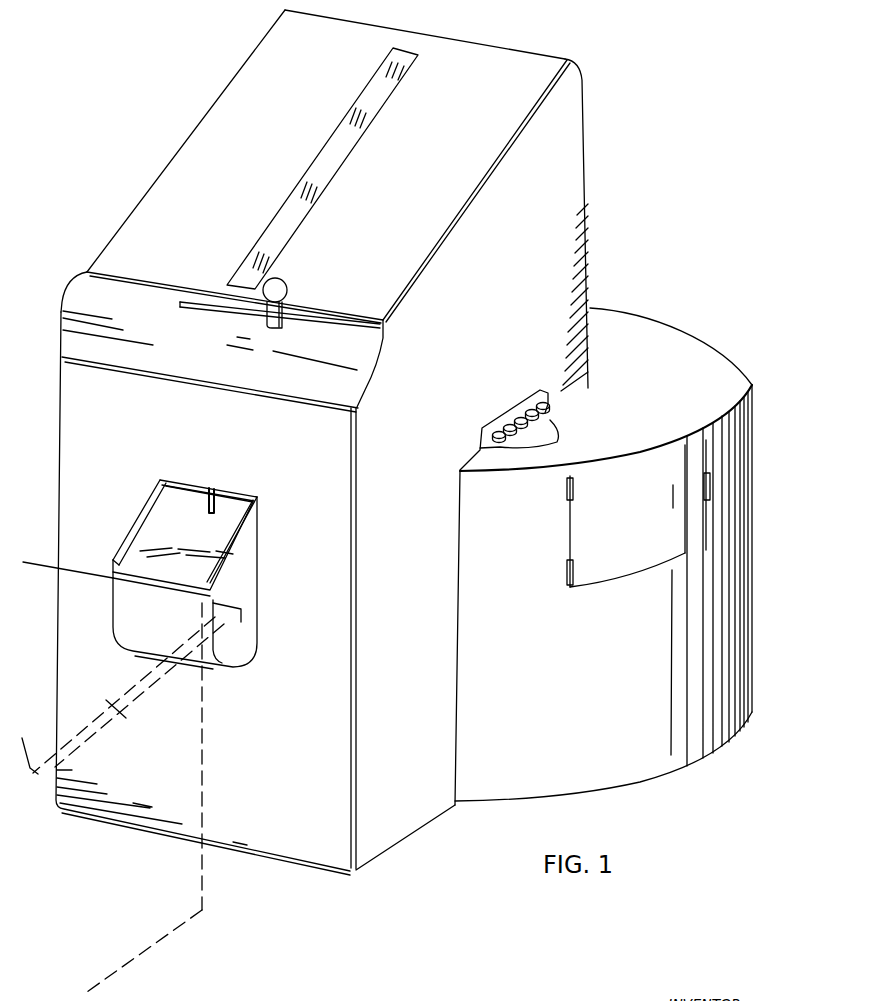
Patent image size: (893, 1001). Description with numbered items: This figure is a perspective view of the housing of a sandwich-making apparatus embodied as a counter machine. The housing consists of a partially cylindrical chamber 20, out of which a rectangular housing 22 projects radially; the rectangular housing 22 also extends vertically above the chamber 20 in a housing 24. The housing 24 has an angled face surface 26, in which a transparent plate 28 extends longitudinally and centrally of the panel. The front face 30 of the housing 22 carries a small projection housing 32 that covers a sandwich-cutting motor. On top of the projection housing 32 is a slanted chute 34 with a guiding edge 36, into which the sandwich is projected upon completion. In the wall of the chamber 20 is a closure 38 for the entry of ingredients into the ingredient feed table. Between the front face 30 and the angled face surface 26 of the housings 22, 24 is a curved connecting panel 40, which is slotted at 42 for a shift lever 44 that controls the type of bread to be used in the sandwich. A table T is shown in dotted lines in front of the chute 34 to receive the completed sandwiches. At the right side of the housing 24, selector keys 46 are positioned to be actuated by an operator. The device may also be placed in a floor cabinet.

The partially cylindrical chamber 20 is at (628, 330).
The rectangular housing 22 is at (447, 705).
The housing 24 is at (577, 113).
The angled face surface 26 is at (497, 55).
The transparent plate 28 is at (320, 187).
The front face 30 is at (320, 853).
The projection housing 32 is at (234, 653).
The chute 34 is at (172, 578).
The guiding edge 36 is at (146, 526).
The closure 38 is at (627, 568).
The curved connecting panel 40 is at (345, 330).
The slot 42 is at (228, 320).
The shift lever 44 is at (281, 280).
The selector keys 46 is at (535, 418).
The table T is at (123, 777).